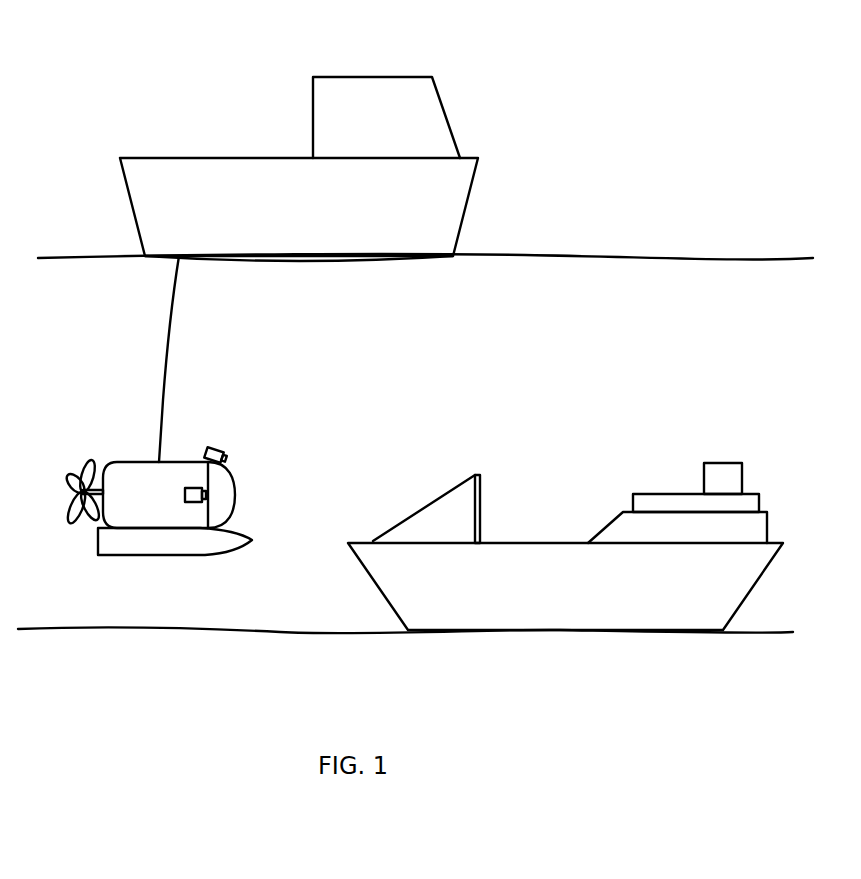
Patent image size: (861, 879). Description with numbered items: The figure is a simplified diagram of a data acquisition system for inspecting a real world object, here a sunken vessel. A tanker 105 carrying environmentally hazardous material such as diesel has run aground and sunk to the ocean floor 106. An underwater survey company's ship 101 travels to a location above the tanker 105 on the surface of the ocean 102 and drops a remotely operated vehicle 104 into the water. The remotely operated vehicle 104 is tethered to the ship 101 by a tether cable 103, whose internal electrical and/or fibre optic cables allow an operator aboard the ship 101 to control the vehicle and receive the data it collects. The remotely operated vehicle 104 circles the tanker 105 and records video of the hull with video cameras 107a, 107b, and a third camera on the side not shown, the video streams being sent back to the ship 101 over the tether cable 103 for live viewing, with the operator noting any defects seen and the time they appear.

The ship 101 is at (410, 77).
The ocean 102 is at (528, 252).
The tether cable 103 is at (173, 362).
The remotely operated vehicle 104 is at (237, 495).
The tanker 105 is at (717, 442).
The ocean floor 106 is at (285, 630).
The video camera 107a is at (193, 505).
The video camera 107b is at (208, 450).